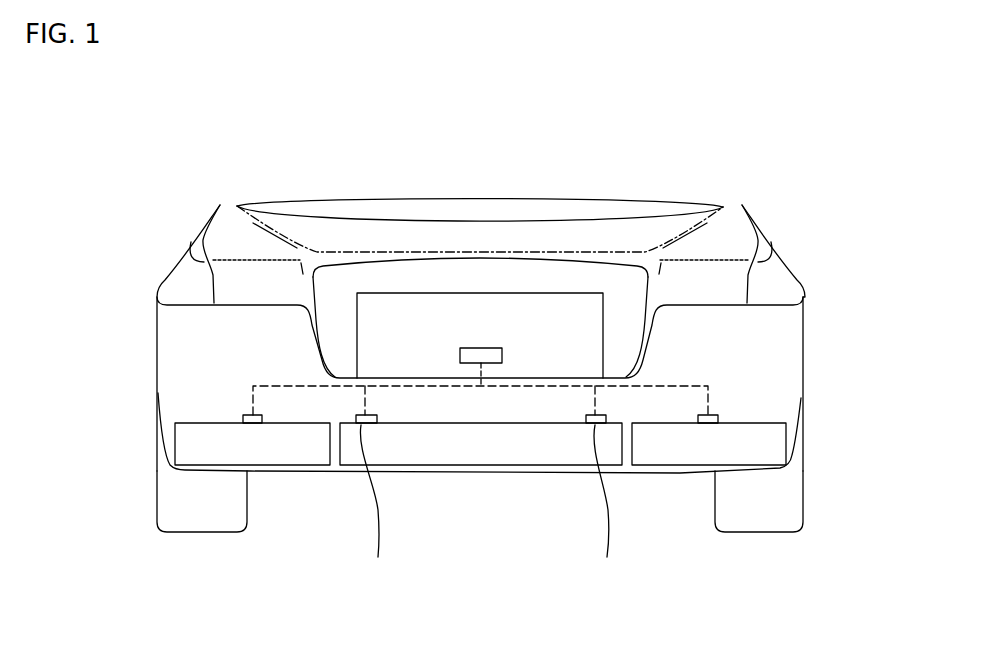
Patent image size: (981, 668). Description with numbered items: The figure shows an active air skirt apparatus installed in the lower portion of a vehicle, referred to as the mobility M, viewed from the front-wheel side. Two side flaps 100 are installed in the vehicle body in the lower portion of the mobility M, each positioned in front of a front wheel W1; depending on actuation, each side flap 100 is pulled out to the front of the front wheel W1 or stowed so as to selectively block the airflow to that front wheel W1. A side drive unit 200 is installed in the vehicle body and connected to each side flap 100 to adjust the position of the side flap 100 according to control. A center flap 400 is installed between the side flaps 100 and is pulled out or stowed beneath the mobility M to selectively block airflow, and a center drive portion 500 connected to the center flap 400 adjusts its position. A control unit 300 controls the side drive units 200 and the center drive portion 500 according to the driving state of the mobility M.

The mobility M is at (785, 208).
The front wheel W1 is at (200, 520).
The side flap 100 is at (187, 443).
The side drive unit 200 is at (245, 415).
The control unit 300 is at (481, 348).
The center flap 400 is at (465, 453).
The center drive portion 500 is at (484, 509).